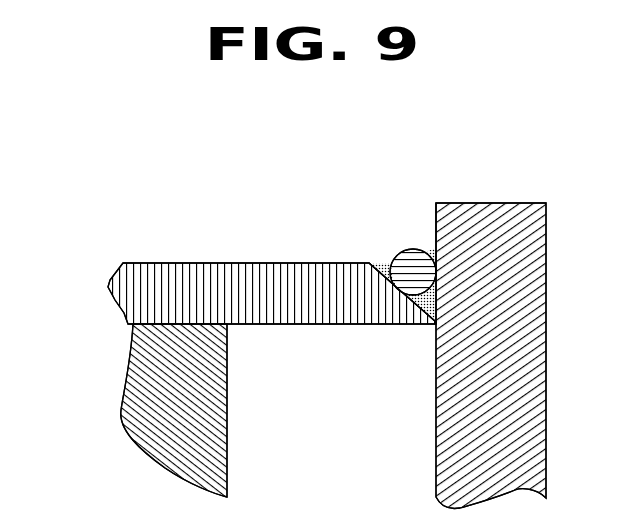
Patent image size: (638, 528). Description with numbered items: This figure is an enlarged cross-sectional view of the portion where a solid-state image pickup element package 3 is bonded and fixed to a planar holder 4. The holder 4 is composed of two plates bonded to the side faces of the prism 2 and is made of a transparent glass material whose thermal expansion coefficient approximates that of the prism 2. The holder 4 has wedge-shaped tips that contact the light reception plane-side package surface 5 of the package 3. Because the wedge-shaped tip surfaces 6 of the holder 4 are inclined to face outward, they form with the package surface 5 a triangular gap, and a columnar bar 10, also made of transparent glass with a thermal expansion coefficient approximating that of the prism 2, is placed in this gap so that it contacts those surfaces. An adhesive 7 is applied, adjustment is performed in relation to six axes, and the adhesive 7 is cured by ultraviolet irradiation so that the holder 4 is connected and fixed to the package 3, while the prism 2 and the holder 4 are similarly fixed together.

The prism 2 is at (145, 388).
The solid-state image pickup element package 3 is at (530, 203).
The holder 4 is at (170, 263).
The light reception plane-side package surface 5 is at (436, 218).
The wedge-shaped tip surfaces 6 is at (392, 278).
The adhesive 7 is at (389, 266).
The columnar bar 10 is at (410, 277).